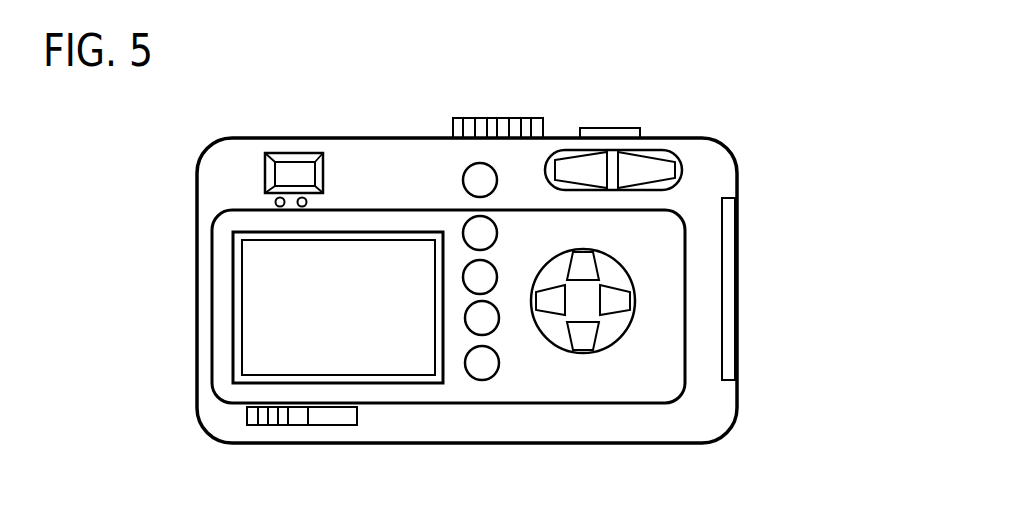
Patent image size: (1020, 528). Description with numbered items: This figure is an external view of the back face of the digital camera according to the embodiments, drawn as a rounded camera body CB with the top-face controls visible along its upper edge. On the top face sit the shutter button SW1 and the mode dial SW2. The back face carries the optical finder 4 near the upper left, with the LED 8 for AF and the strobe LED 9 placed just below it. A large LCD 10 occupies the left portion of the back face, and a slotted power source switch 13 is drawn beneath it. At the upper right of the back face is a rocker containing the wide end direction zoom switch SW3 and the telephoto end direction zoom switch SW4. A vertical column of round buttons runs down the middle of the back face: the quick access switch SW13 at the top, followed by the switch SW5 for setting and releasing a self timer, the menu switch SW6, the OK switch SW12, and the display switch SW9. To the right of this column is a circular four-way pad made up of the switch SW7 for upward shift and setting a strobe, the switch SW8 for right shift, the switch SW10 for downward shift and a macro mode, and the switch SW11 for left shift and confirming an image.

The optical finder 4 is at (293, 172).
The LED for AF 8 is at (276, 201).
The strobe LED 9 is at (306, 201).
The LCD 10 is at (385, 360).
The power source switch 13 is at (272, 425).
The camera body CB is at (737, 170).
The shutter button SW1 is at (620, 128).
The mode dial SW2 is at (474, 118).
The wide end direction zoom switch SW3 is at (573, 157).
The telephoto end direction zoom switch SW4 is at (658, 162).
The switch for setting and releasing a self timer SW5 is at (478, 232).
The menu switch SW6 is at (488, 275).
The switch for upward shift and setting a strobe SW7 is at (587, 268).
The switch for right shift SW8 is at (620, 300).
The display switch SW9 is at (483, 367).
The switch for downward shift and a macro mode SW10 is at (585, 332).
The switch for left shift and confirming an image SW11 is at (548, 305).
The OK switch SW12 is at (487, 320).
The quick access switch SW13 is at (478, 178).